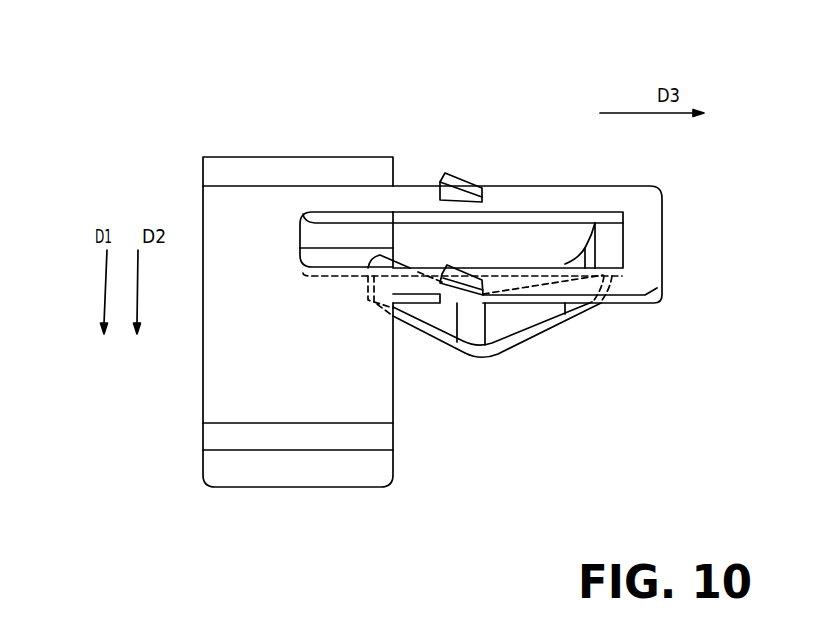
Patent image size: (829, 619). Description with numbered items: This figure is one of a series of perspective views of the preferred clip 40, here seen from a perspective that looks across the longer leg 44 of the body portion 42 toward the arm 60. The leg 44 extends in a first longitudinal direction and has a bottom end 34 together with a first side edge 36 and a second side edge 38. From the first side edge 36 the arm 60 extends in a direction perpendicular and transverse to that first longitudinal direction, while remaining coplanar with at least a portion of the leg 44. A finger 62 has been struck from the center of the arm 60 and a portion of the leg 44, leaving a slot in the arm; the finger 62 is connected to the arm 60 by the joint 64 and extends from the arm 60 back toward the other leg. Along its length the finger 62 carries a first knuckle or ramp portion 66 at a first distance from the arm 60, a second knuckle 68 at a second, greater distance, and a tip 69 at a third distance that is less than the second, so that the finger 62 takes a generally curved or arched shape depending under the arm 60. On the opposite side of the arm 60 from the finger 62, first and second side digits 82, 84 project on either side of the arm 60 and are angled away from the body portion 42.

The bottom end 34 is at (230, 448).
The first side edge 36 is at (392, 400).
The second side edge 38 is at (203, 356).
The clip 40 is at (217, 138).
The body portion 42 is at (183, 211).
The leg 44 is at (215, 402).
The arm 60 is at (538, 168).
The finger 62 is at (552, 348).
The joint 64 is at (612, 230).
The first knuckle or ramp portion 66 is at (585, 312).
The second knuckle 68 is at (468, 346).
The tip 69 is at (365, 315).
The first side digit 82 is at (460, 280).
The second side digit 84 is at (464, 175).